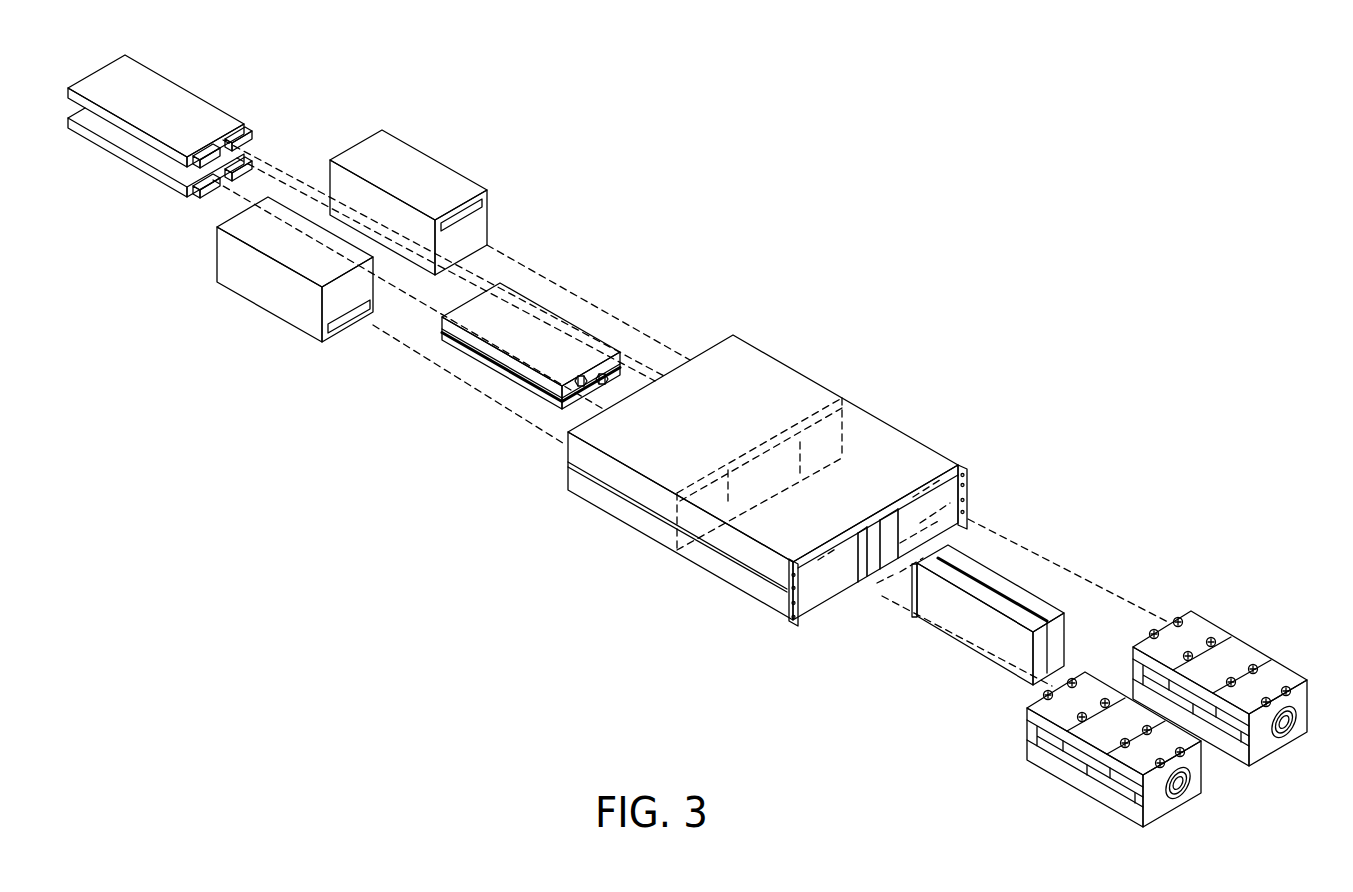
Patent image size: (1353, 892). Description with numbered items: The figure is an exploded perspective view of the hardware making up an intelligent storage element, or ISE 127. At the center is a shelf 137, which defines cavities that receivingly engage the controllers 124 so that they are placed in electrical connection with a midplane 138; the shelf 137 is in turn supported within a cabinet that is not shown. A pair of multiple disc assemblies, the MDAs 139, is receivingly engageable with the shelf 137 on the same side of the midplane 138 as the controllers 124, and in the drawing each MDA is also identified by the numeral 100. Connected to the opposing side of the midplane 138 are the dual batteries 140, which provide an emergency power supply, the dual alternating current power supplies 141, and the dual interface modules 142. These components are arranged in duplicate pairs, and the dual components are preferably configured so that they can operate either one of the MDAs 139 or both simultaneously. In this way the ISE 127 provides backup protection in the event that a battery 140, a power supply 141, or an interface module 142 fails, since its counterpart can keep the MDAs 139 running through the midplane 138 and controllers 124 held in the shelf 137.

The ISE 127 is at (816, 181).
The dual interface modules 142 is at (185, 108).
The dual alternating current power supplies 141 is at (405, 173).
The dual batteries 140 is at (523, 308).
The midplane 138 is at (768, 457).
The shelf 137 is at (629, 525).
The controllers 124 is at (1023, 593).
The storage device 100 is at (1027, 752).
The multiple disc assemblies (MDAs) 139 is at (1075, 790).